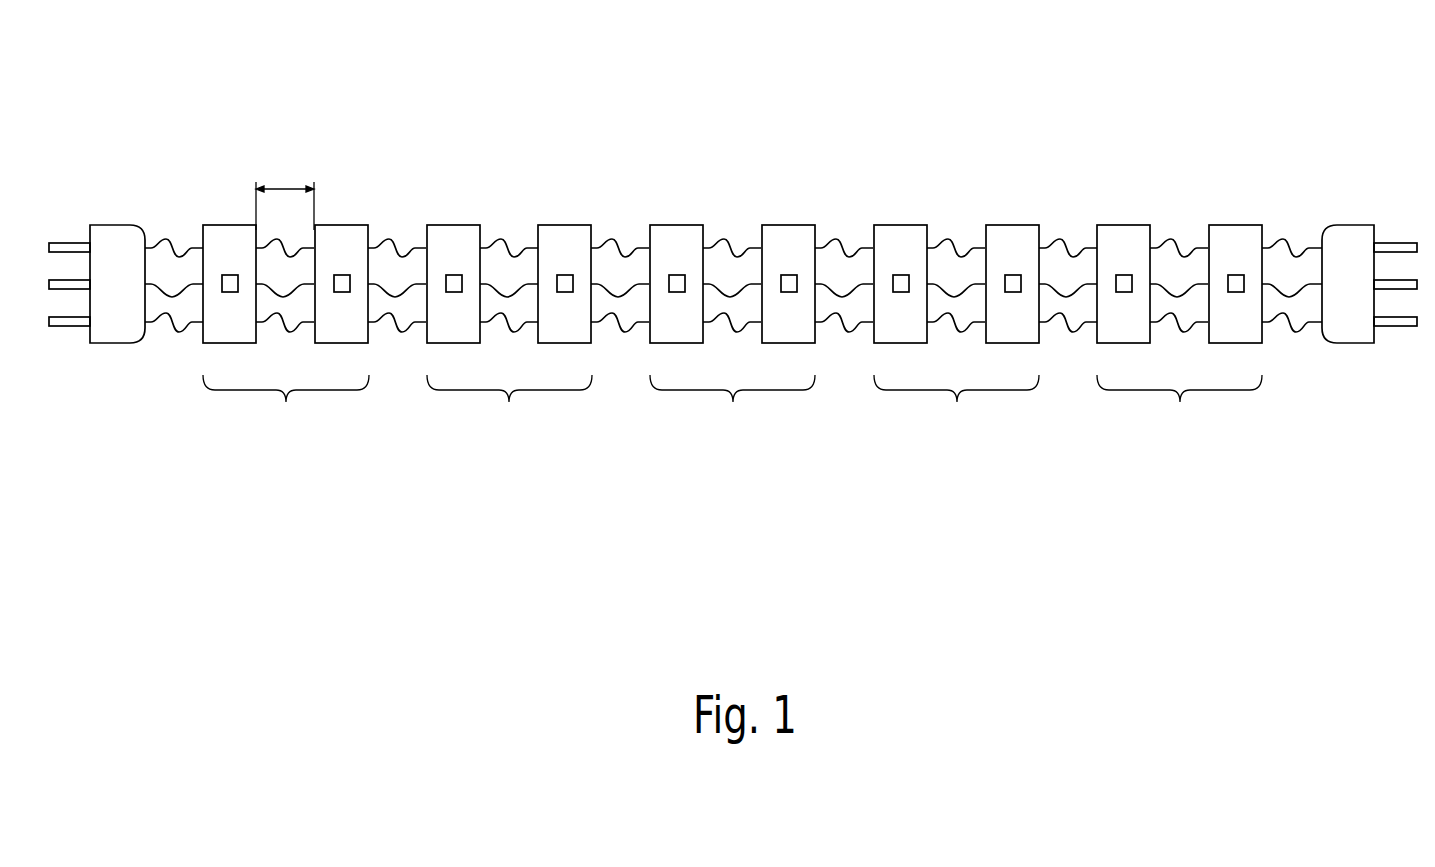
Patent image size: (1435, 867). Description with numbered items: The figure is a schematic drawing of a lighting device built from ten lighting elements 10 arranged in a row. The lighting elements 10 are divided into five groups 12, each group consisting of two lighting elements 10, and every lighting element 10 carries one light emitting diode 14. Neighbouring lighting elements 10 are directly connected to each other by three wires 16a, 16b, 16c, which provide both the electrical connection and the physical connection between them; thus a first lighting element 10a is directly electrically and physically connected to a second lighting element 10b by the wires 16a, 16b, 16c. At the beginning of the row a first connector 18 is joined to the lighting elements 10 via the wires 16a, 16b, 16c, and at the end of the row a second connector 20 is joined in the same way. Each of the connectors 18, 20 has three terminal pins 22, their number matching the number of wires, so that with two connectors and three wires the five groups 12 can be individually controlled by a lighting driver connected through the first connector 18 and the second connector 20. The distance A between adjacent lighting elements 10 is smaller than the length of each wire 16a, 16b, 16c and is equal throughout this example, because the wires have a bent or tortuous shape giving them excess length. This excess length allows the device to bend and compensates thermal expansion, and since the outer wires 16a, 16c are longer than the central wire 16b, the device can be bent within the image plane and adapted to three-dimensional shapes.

The lighting element 10 is at (707, 287).
The first lighting element 10a is at (230, 333).
The second lighting element 10b is at (338, 333).
The group 12 is at (732, 411).
The light emitting diode 14 is at (230, 275).
The first wire 16a is at (273, 240).
The second wire 16b is at (287, 294).
The third wire 16c is at (297, 332).
The first connector 18 is at (110, 243).
The second connector 20 is at (1343, 247).
The terminal pin 22 is at (1407, 245).
The distance A is at (285, 186).